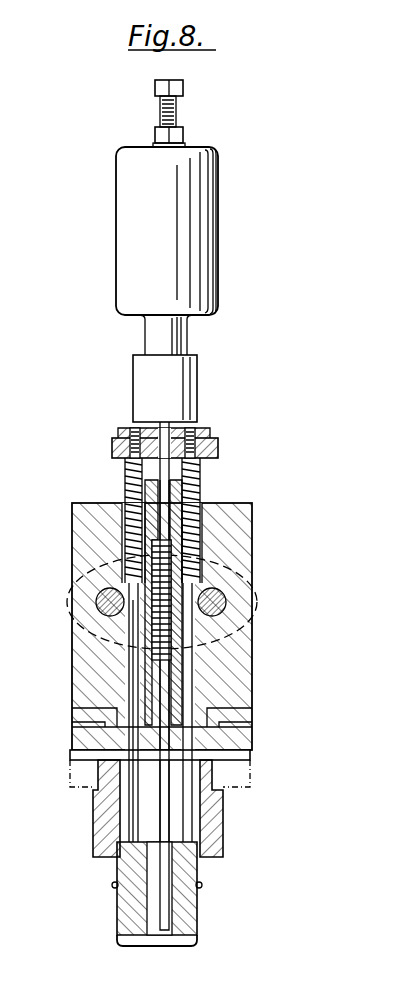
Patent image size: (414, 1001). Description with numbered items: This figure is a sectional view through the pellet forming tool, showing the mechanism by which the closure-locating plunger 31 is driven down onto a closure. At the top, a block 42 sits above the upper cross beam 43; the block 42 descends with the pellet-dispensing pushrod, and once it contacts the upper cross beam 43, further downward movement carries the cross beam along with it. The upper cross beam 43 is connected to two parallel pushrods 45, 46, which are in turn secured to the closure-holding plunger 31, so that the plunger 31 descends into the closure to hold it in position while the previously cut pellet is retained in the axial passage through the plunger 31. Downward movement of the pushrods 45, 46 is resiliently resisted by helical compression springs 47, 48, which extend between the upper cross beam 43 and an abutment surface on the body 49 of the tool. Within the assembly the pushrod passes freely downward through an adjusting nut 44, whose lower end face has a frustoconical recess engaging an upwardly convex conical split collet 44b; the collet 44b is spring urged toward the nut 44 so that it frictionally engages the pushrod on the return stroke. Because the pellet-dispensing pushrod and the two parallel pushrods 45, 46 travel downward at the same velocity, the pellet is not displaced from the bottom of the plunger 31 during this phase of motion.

The closure-locating plunger 31 is at (183, 902).
The block 42 is at (186, 394).
The upper cross beam 43 is at (214, 446).
The adjusting nut 44 is at (200, 492).
The split collet 44b is at (180, 530).
The pushrod 45 is at (131, 815).
The pushrod 46 is at (188, 830).
The helical compression spring 47 is at (127, 471).
The helical compression spring 48 is at (186, 470).
The body 49 is at (253, 672).